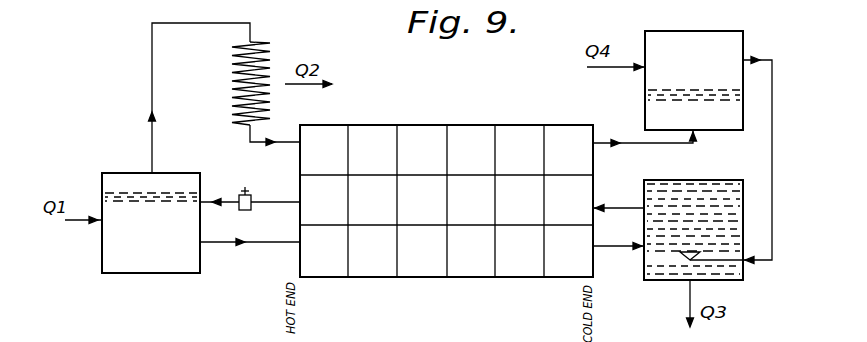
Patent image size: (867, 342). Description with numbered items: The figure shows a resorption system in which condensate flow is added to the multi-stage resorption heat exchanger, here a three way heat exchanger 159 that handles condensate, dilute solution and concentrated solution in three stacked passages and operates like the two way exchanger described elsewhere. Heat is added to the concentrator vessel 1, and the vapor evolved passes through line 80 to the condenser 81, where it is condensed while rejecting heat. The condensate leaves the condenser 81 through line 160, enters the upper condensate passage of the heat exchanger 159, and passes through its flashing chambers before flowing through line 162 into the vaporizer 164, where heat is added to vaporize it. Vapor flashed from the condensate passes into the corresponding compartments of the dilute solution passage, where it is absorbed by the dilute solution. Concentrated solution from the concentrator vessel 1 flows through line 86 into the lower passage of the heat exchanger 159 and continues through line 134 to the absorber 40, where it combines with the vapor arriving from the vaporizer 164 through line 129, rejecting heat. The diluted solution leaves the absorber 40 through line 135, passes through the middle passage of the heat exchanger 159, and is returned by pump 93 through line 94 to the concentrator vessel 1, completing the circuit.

The concentrator vessel 1 is at (102, 178).
The line 80 is at (150, 58).
The condenser 81 is at (232, 78).
The line 160 is at (250, 142).
The three way heat exchanger 159 is at (385, 118).
The pump 93 is at (240, 194).
The line 94 is at (270, 200).
The line 86 is at (264, 242).
The vaporizer 164 is at (695, 31).
The line 162 is at (649, 147).
The vapor return conduit 129 is at (790, 151).
The dilute solution conduit 135 is at (631, 192).
The concentrated solution conduit 134 is at (618, 239).
The absorber 40 is at (657, 281).